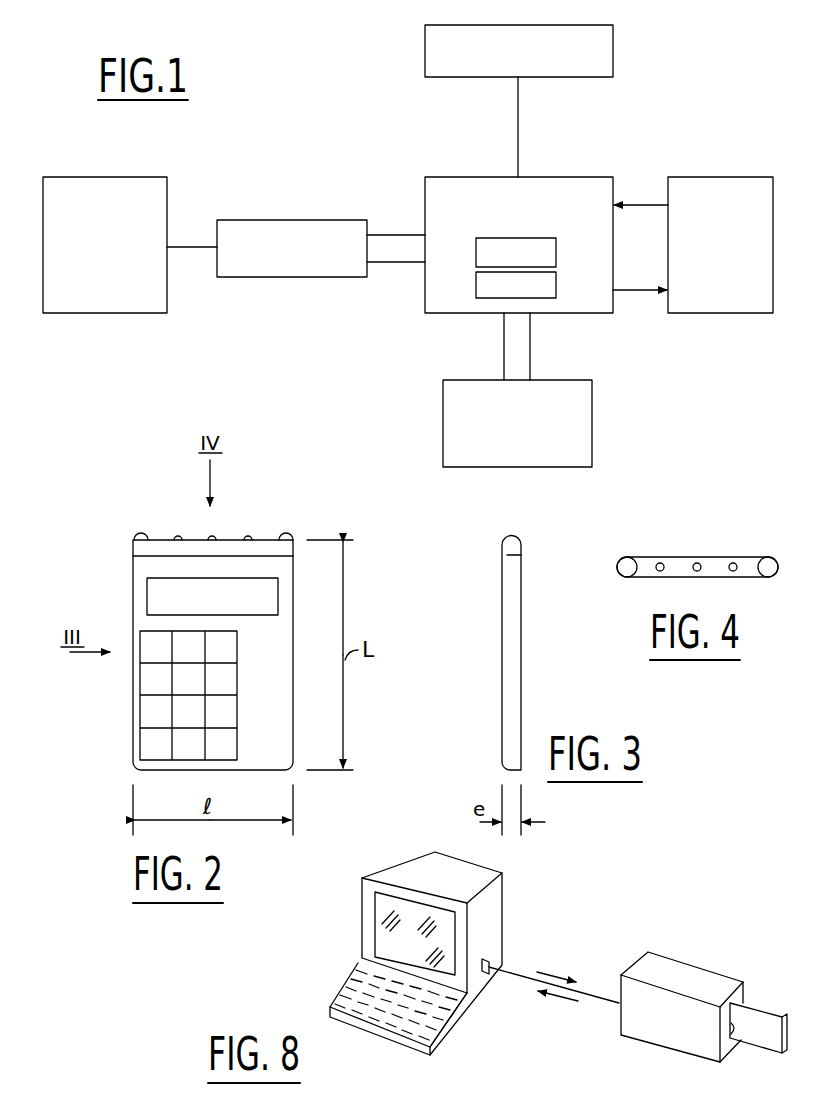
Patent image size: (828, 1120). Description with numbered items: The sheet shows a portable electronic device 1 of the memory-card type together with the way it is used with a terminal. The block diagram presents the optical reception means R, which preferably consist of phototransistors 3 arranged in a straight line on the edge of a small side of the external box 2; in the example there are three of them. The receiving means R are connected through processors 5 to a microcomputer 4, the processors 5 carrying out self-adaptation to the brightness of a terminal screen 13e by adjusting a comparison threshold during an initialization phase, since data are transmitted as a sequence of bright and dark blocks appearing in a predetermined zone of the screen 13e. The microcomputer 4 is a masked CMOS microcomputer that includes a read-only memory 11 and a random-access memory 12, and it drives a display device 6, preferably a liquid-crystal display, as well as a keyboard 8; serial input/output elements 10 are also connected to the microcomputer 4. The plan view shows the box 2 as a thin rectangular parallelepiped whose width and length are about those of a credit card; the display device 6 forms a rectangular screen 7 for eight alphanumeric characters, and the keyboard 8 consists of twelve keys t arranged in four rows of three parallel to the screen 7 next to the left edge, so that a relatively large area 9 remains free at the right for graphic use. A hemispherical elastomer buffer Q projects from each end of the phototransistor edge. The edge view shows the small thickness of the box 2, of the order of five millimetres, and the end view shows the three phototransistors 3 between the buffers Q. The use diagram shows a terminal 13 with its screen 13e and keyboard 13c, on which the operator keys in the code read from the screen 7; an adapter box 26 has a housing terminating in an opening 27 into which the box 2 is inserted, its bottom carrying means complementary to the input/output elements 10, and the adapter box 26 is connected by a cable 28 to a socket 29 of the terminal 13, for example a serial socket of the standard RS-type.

In FIG. 1, the portable electronic device 1 is at (282, 88).
In FIG. 2, the portable electronic device 1 is at (199, 632).
In FIG. 3, the portable electronic device 1 is at (501, 639).
In FIG. 4, the portable electronic device 1 is at (680, 542).
In FIG. 8, the portable electronic device 1 is at (760, 1005).
In FIG. 3, the external box 2 is at (517, 608).
In FIG. 8, the external box 2 is at (758, 1020).
In FIG. 2, the phototransistors 3 is at (212, 538).
In FIG. 4, the phototransistors 3 is at (732, 563).
In FIG. 1, the microcomputer 4 is at (573, 176).
In FIG. 1, the processors 5 is at (247, 220).
In FIG. 1, the display device 6 is at (613, 48).
In FIG. 2, the display device 6 is at (256, 576).
In FIG. 2, the screen 7 is at (158, 600).
In FIG. 1, the keyboard 8 is at (592, 411).
In FIG. 2, the keyboard 8 is at (139, 700).
In FIG. 2, the area 9 is at (268, 701).
In FIG. 1, the serial input/output elements 10 is at (740, 177).
In FIG. 1, the read-only memory 11 is at (556, 253).
In FIG. 1, the random-access memory 12 is at (543, 298).
In FIG. 8, the terminal 13 is at (438, 958).
In FIG. 8, the terminal screen 13e is at (385, 937).
In FIG. 8, the terminal keyboard 13c is at (418, 1021).
In FIG. 8, the adapter box 26 is at (670, 1026).
In FIG. 8, the opening 27 is at (736, 1036).
In FIG. 8, the cable 28 is at (594, 997).
In FIG. 8, the socket 29 is at (487, 972).
In FIG. 1, the optical reception means R is at (80, 173).
In FIG. 2, the buffer Q is at (139, 533).
In FIG. 3, the buffer Q is at (505, 536).
In FIG. 4, the buffer Q is at (619, 560).
In FIG. 2, the keys t is at (151, 745).